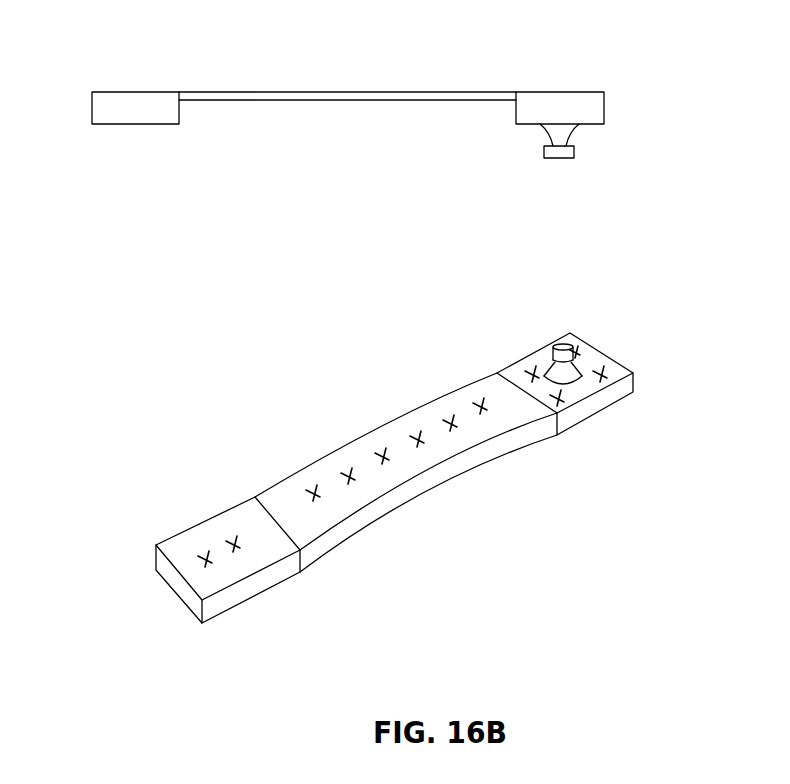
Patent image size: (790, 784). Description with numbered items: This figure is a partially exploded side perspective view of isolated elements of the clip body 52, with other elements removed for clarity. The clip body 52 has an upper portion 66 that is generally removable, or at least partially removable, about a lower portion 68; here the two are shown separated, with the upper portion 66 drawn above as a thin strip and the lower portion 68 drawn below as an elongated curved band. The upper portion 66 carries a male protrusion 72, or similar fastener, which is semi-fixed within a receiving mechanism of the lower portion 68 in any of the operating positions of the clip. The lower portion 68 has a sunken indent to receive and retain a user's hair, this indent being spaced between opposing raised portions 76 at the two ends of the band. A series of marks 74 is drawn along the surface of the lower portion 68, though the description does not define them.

The clip body 52 is at (380, 243).
The upper portion 66 is at (262, 92).
The male protrusion 72 is at (575, 152).
The lower portion 68 is at (468, 458).
The fastening points 74 is at (395, 460).
The raised portions 76 is at (247, 580).